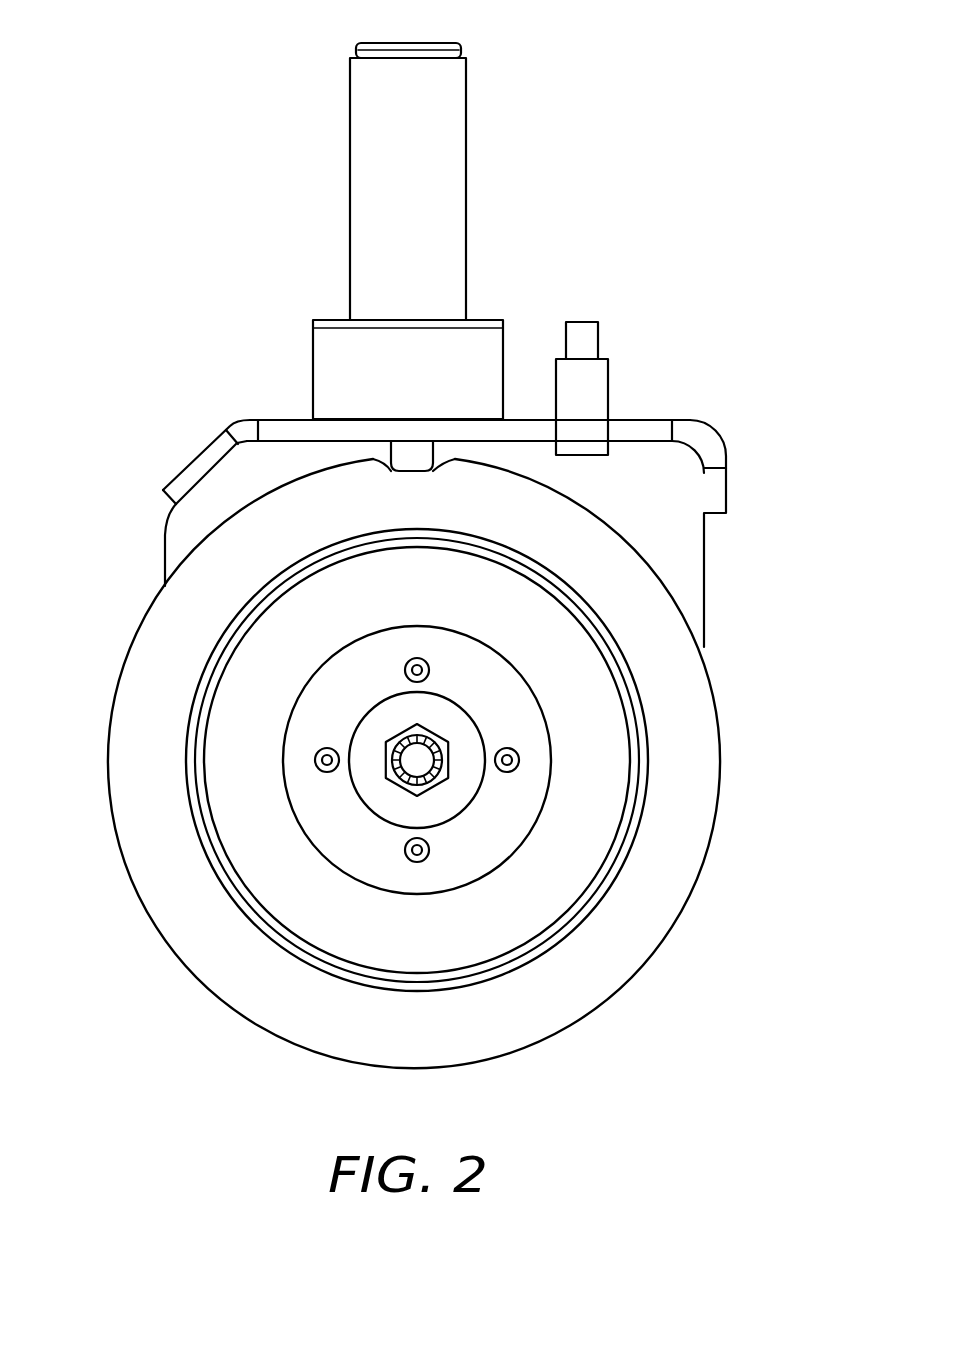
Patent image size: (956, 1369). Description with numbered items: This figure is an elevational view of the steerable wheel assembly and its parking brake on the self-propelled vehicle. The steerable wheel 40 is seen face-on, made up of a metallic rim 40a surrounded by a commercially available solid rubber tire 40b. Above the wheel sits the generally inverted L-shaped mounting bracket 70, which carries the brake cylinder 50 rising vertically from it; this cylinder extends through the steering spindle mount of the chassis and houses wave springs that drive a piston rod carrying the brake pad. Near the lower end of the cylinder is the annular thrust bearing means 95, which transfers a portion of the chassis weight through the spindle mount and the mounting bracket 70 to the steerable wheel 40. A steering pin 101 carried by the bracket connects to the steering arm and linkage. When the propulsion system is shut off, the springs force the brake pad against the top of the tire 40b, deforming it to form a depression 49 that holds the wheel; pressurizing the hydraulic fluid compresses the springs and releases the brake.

The steerable wheel 40 is at (437, 763).
The metallic rim 40a is at (590, 881).
The solid rubber tire 40b is at (713, 740).
The depression 49 is at (389, 471).
The brake cylinder 50 is at (467, 125).
The mounting bracket 70 is at (646, 427).
The annular thrust bearing means 95 is at (313, 353).
The steering pin 101 is at (592, 320).